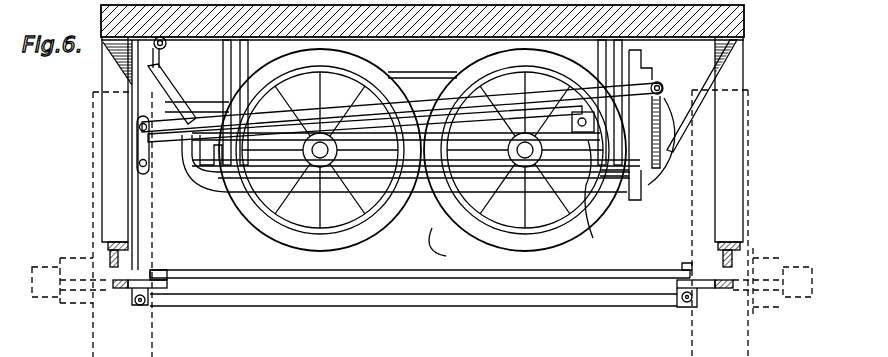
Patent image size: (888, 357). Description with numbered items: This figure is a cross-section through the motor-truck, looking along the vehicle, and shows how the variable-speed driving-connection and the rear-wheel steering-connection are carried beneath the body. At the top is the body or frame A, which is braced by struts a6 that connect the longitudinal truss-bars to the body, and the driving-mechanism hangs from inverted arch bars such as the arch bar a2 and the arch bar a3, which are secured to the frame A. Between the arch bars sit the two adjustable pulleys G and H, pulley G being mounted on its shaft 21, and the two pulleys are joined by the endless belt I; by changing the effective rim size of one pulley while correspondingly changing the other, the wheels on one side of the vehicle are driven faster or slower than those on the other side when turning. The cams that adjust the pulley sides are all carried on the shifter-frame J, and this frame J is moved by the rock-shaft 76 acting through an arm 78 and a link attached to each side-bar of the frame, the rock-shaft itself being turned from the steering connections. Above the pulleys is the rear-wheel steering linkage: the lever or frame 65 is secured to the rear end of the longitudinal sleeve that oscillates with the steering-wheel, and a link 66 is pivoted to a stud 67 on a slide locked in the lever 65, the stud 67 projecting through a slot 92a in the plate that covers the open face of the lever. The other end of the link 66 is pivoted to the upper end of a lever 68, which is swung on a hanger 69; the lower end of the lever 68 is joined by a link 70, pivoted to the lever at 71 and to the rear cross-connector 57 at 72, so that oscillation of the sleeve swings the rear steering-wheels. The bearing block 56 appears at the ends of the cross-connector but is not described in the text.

The body or frame A is at (745, 17).
The inverted arch bar a3 is at (200, 182).
The strut a6 is at (104, 201).
The inverted arch bar a2 is at (110, 253).
The shaft 21 is at (316, 152).
The adjustable pulley G is at (320, 155).
The adjustable pulley H is at (540, 242).
The endless belt I is at (437, 242).
The frame J is at (592, 196).
The bearing block 56 is at (123, 290).
The cross-connector 57 is at (605, 275).
The lever or frame 65 is at (644, 162).
The link 66 is at (417, 108).
The stud 67 is at (663, 86).
The lever 68 is at (131, 162).
The hanger 69 is at (140, 76).
The link 70 is at (331, 307).
The pivotal connection 71 is at (147, 302).
The pivotal connection 72 is at (684, 302).
The rock-shaft 76 is at (166, 45).
The arm 78 is at (160, 68).
The slot 92a is at (664, 158).